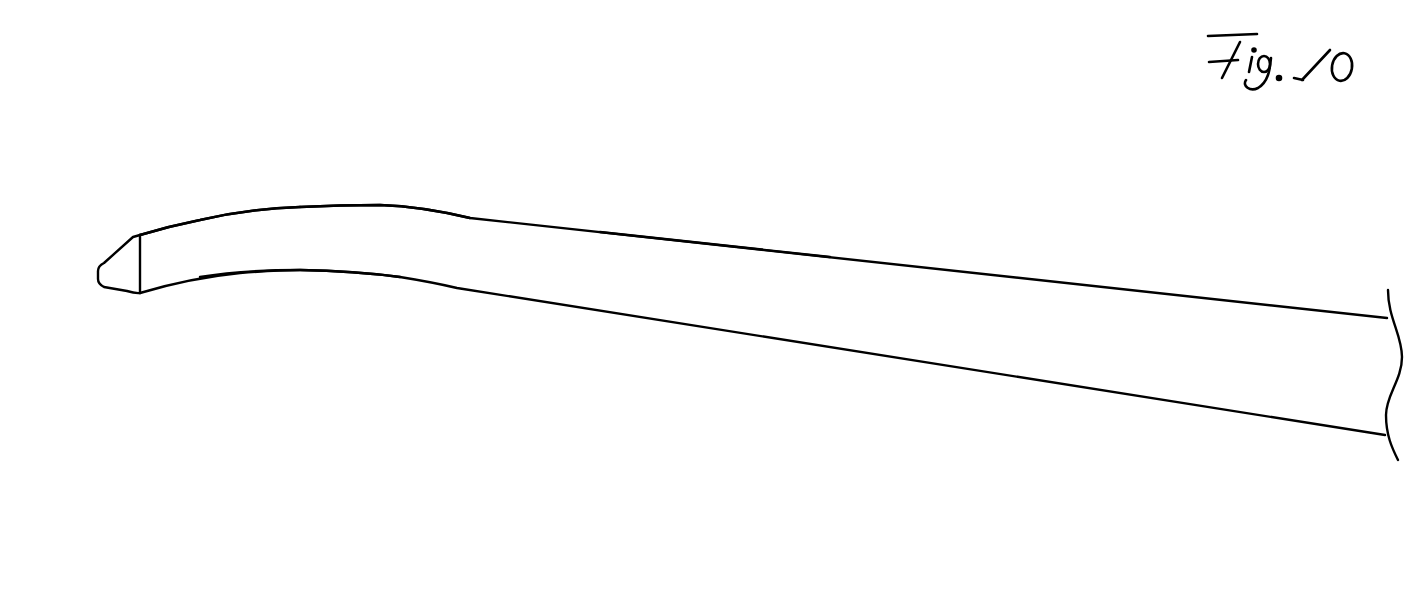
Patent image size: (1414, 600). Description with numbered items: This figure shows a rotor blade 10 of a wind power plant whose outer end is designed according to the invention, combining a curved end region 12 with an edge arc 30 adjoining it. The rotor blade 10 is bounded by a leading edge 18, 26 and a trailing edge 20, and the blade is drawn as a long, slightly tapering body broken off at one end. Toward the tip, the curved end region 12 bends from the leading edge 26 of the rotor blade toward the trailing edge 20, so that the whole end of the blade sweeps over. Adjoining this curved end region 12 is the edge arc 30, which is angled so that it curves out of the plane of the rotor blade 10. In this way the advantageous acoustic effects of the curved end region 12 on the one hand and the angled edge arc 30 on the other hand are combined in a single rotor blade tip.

The rotor blade 10 is at (925, 210).
The curved end region 12 is at (228, 250).
The leading edge 18 is at (363, 200).
The trailing edge 20 is at (273, 273).
The leading edge 26 is at (715, 242).
The edge arc 30 is at (120, 272).